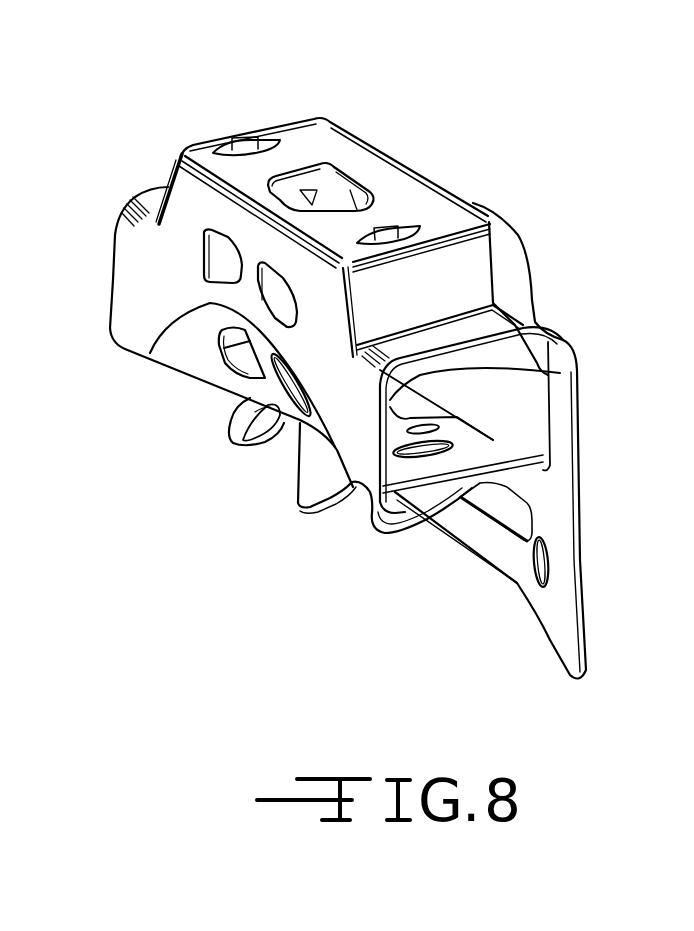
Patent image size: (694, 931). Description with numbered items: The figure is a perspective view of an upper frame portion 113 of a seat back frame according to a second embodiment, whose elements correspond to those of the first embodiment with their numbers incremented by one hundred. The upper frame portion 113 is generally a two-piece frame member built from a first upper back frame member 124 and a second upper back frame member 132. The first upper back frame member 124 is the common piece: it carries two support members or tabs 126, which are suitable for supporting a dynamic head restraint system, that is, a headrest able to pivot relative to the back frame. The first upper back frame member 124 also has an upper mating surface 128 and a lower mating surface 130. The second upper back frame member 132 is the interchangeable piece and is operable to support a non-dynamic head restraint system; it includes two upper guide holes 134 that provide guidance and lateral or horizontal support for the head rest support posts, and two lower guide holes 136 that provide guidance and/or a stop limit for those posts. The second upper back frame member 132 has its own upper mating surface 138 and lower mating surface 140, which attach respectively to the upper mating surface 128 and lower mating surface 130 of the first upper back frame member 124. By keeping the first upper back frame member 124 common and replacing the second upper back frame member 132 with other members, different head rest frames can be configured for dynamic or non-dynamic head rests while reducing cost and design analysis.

The upper frame portion 113 is at (453, 136).
The first upper back frame member 124 is at (583, 530).
The tabs 126 is at (233, 437).
The upper mating surface 128 is at (443, 187).
The lower mating surface 130 is at (473, 412).
The second upper back frame member 132 is at (168, 188).
The upper guide holes 134 is at (243, 137).
The lower guide holes 136 is at (425, 456).
The upper mating surface 138 is at (338, 152).
The lower mating surface 140 is at (560, 373).